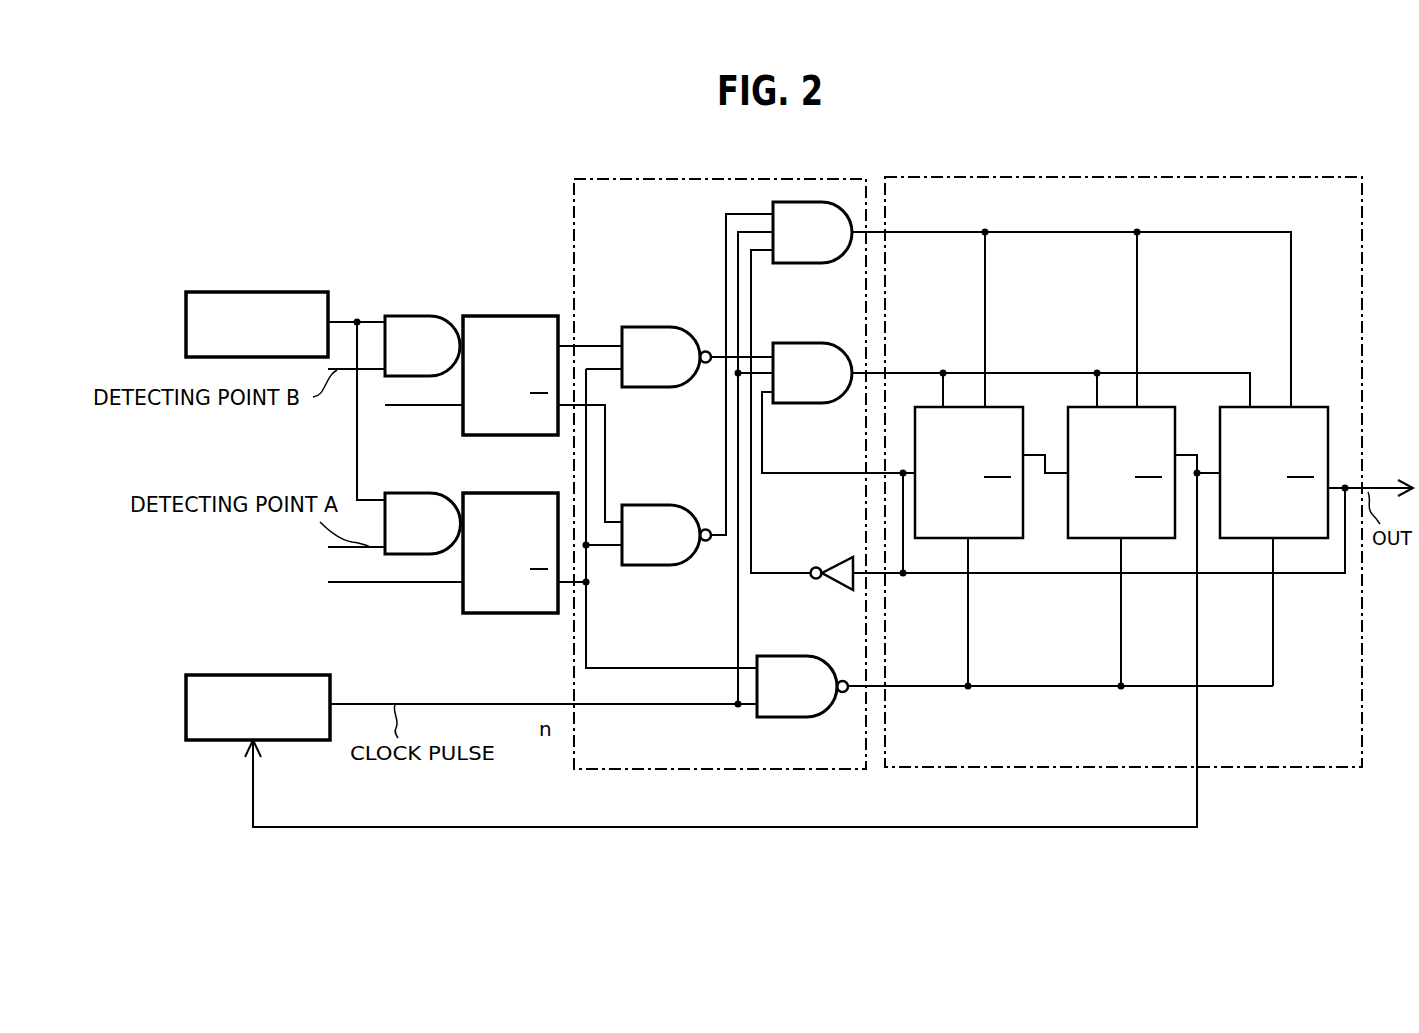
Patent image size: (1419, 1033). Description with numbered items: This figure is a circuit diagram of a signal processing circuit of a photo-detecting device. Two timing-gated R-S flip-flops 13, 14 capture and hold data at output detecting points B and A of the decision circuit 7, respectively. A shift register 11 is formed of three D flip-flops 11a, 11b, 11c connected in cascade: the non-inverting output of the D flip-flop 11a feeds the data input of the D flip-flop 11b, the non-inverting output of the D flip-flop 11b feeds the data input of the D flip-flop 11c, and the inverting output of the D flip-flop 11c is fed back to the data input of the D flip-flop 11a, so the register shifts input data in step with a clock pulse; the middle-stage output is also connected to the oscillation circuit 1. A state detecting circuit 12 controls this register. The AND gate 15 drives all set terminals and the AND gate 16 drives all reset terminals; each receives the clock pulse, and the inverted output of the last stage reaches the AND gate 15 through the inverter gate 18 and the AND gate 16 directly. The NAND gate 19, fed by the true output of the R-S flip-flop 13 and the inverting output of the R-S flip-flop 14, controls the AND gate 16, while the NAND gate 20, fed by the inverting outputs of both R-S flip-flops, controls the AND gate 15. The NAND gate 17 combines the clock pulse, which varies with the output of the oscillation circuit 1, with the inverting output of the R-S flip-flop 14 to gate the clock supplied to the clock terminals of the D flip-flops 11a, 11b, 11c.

The oscillation circuit 1 is at (262, 675).
The decision circuit 7 is at (252, 292).
The shift register 11 is at (965, 177).
The D flip-flop 11a is at (1005, 407).
The D flip-flop 11b is at (1165, 407).
The D flip-flop 11c is at (1322, 407).
The state detecting circuit 12 is at (574, 213).
The R-S flip-flop 13 is at (504, 316).
The R-S flip-flop 14 is at (503, 493).
The AND gate 15 is at (800, 263).
The AND gate 16 is at (803, 403).
The NAND gate 17 is at (790, 656).
The inverter gate 18 is at (835, 560).
The NAND gate 19 is at (654, 327).
The NAND gate 20 is at (654, 505).